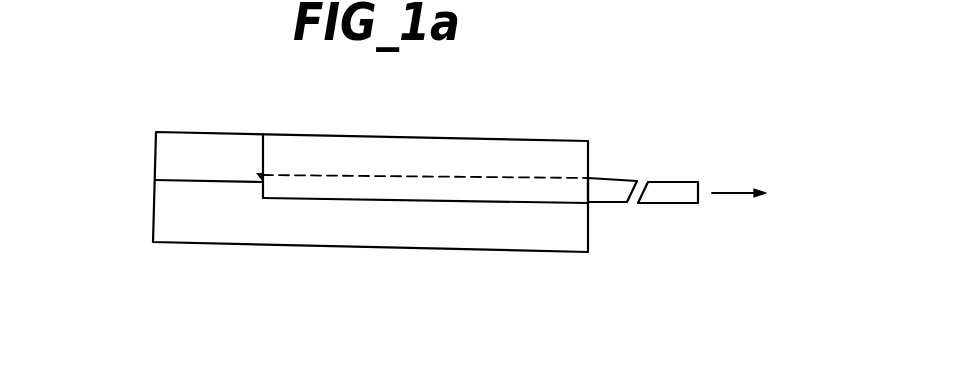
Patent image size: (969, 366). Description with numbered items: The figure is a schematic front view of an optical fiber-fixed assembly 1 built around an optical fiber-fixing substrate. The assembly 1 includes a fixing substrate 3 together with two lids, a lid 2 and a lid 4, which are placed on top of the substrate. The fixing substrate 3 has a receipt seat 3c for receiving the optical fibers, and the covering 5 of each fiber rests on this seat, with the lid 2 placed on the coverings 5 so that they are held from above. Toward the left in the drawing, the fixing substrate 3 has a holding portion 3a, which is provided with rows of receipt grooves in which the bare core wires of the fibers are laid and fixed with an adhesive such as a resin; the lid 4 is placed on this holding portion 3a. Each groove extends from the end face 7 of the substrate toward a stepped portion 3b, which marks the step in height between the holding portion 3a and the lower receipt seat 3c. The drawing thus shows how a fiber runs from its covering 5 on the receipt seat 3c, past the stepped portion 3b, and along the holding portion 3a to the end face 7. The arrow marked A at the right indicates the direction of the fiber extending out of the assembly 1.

The optical fiber-fixed assembly 1 is at (567, 134).
The lid 2 is at (358, 148).
The fixing substrate 3 is at (136, 187).
The holding portion 3a is at (225, 197).
The stepped portion 3b is at (575, 235).
The receipt seat 3c is at (422, 200).
The lid 4 is at (185, 143).
The covering 5 is at (672, 188).
The end face 7 is at (152, 222).
The direction A is at (733, 197).